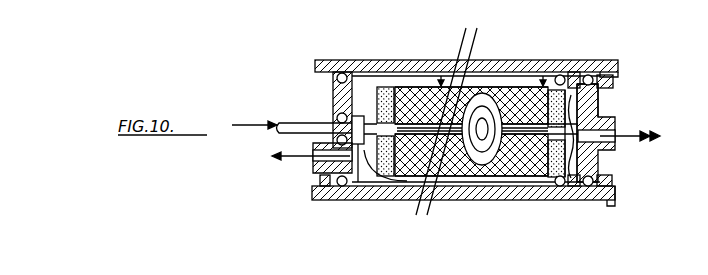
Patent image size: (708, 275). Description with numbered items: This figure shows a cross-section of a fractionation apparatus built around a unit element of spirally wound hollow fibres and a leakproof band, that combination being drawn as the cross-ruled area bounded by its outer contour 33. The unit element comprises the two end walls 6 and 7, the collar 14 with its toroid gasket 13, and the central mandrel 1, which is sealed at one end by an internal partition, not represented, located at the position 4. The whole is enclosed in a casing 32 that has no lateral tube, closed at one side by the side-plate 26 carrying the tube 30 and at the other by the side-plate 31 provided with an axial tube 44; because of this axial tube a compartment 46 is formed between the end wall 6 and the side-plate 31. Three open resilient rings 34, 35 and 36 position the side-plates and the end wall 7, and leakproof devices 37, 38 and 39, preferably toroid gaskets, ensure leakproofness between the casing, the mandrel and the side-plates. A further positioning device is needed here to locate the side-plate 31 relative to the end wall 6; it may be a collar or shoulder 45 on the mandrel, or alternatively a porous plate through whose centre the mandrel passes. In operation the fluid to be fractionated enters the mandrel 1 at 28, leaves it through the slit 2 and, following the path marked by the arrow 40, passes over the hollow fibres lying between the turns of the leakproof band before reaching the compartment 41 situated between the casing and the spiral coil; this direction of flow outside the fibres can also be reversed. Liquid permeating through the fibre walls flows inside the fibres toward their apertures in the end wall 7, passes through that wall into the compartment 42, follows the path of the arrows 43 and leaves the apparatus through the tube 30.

The mandrel 1 is at (275, 148).
The slit 2 is at (418, 176).
The position of internal partition 4 is at (535, 177).
The end wall 6 is at (386, 90).
The end wall 7 is at (536, 77).
The toroid gasket 13 is at (569, 83).
The collar 14 is at (542, 78).
The side-plate 26 is at (600, 120).
The mandrel inlet 28 is at (286, 120).
The tube 30 is at (657, 138).
The side-plate 31 is at (330, 82).
The casing 32 is at (486, 63).
The outer contour of spiral coil 33 is at (452, 62).
The open resilient ring 34 is at (326, 188).
The open resilient ring 35 is at (575, 200).
The open resilient ring 36 is at (597, 202).
The leakproof device 37 is at (335, 117).
The leakproof device 38 is at (341, 72).
The leakproof device 39 is at (589, 77).
The flow path arrow 40 is at (447, 186).
The compartment 41 is at (418, 78).
The compartment 42 is at (600, 95).
The flow path arrows 43 is at (598, 160).
The axial tube 44 is at (317, 163).
The collar or shoulder 45 is at (357, 152).
The compartment 46 is at (365, 96).